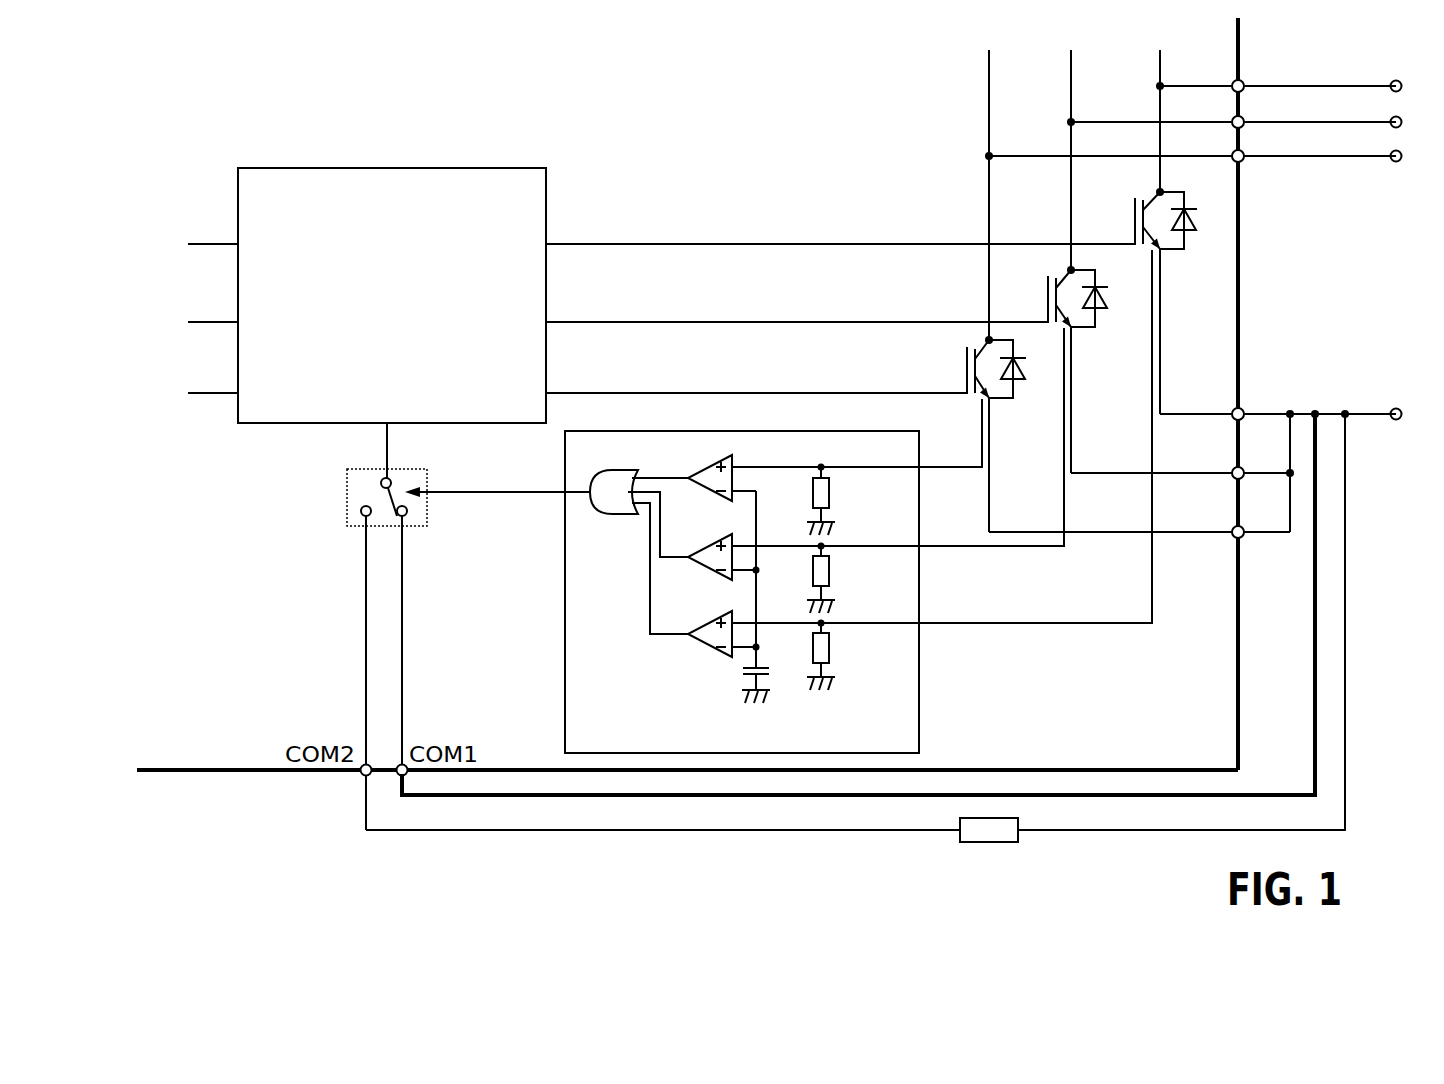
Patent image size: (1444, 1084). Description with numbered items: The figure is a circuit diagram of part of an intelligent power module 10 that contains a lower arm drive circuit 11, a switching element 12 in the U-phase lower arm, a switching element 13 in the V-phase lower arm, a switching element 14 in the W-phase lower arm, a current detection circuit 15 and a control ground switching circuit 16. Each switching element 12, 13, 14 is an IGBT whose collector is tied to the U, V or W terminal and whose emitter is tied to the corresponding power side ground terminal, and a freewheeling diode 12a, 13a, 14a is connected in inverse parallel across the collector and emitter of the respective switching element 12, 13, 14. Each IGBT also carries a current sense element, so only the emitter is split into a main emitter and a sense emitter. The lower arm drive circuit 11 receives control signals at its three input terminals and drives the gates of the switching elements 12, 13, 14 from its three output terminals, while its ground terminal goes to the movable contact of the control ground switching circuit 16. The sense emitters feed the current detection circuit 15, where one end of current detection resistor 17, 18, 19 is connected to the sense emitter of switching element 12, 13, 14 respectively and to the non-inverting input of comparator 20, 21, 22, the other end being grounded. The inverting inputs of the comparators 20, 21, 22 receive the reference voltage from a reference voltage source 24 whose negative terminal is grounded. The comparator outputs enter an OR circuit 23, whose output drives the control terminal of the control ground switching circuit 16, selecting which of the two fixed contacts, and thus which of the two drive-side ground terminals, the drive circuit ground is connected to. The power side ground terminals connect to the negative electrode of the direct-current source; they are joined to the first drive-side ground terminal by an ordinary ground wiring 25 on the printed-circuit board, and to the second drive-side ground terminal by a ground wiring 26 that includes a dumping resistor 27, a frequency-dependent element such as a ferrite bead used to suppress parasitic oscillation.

The intelligent power module 10 is at (1240, 282).
The lower arm drive circuit 11 is at (398, 166).
The switching element 12 is at (1134, 209).
The freewheeling diode 12a is at (1198, 212).
The switching element 13 is at (1047, 292).
The freewheeling diode 13a is at (1109, 290).
The switching element 14 is at (966, 370).
The freewheeling diode 14a is at (1027, 368).
The current detection circuit 15 is at (919, 717).
The control ground switching circuit 16 is at (347, 498).
The current detection resistor 17 is at (832, 646).
The current detection resistor 18 is at (832, 570).
The current detection resistor 19 is at (832, 492).
The comparator 20 is at (706, 616).
The comparator 21 is at (705, 549).
The comparator 22 is at (702, 472).
The OR circuit 23 is at (604, 516).
The reference voltage source 24 is at (742, 676).
The ground wiring 25 is at (1278, 792).
The ground wiring 26 is at (1105, 833).
The dumping resistor 27 is at (986, 845).